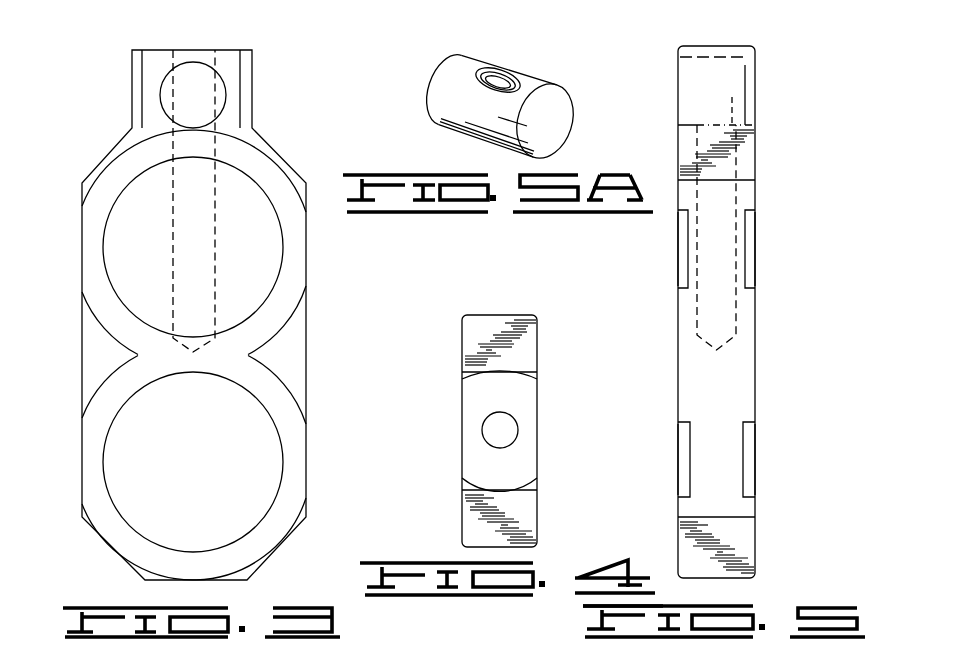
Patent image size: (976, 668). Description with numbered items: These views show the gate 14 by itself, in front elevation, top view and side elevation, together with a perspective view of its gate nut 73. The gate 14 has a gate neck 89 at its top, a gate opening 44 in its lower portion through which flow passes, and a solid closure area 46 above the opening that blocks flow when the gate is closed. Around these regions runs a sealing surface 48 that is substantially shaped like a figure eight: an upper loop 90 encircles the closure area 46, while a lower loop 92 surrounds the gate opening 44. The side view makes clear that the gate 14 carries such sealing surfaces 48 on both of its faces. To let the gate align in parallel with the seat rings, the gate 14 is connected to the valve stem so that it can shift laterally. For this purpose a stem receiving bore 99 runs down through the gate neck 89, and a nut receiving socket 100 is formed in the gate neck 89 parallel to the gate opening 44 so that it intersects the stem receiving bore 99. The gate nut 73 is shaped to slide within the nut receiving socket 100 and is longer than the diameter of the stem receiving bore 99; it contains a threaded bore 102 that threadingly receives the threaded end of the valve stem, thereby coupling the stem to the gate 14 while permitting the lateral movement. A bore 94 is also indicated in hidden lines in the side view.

In FIG. 3, the gate 14 is at (272, 135).
In FIG. 4, the gate 14 is at (543, 320).
In FIG. 5, the gate 14 is at (764, 72).
In FIG. 3, the gate opening 44 is at (132, 460).
In FIG. 3, the closure area 46 is at (148, 213).
In FIG. 3, the sealing surface 48 is at (134, 337).
In FIG. 5, the sealing surface 48 is at (680, 268).
In FIG. 5A, the gate nut 73 is at (431, 103).
In FIG. 3, the gate neck 89 is at (132, 83).
In FIG. 4, the gate neck 89 is at (480, 468).
In FIG. 3, the upper loop 90 is at (280, 300).
In FIG. 5, the upper loop 90 is at (686, 245).
In FIG. 3, the lower loop 92 is at (278, 407).
In FIG. 5, the lower loop 92 is at (685, 443).
In FIG. 5, the bore 94 is at (742, 197).
In FIG. 3, the stem receiving bore 99 is at (215, 217).
In FIG. 4, the stem receiving bore 99 is at (482, 431).
In FIG. 3, the nut receiving socket 100 is at (220, 90).
In FIG. 5, the nut receiving socket 100 is at (757, 113).
In FIG. 5A, the threaded bore 102 is at (504, 70).